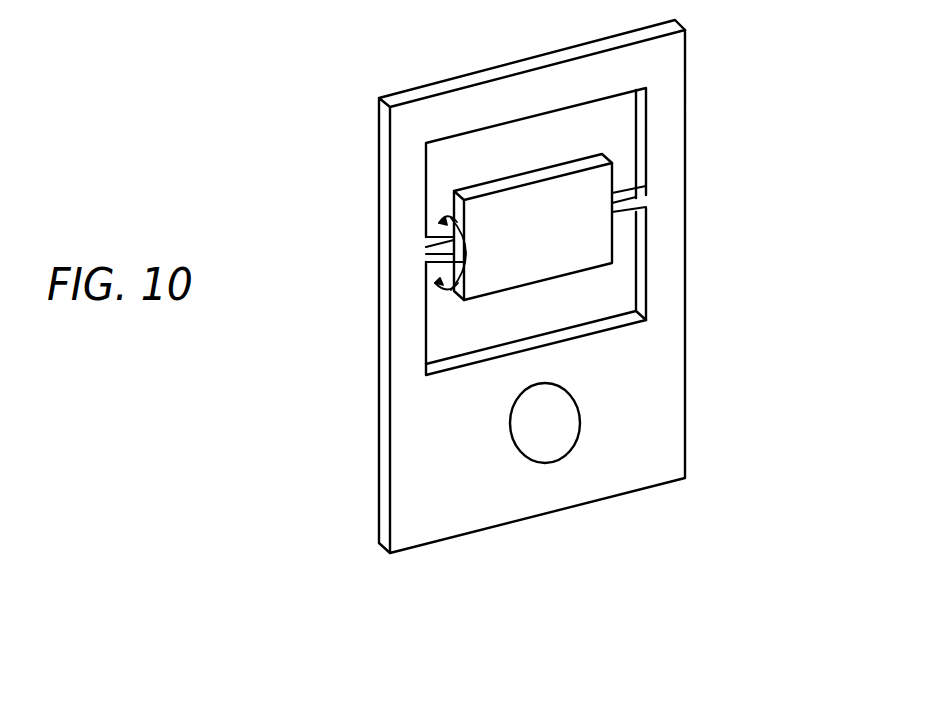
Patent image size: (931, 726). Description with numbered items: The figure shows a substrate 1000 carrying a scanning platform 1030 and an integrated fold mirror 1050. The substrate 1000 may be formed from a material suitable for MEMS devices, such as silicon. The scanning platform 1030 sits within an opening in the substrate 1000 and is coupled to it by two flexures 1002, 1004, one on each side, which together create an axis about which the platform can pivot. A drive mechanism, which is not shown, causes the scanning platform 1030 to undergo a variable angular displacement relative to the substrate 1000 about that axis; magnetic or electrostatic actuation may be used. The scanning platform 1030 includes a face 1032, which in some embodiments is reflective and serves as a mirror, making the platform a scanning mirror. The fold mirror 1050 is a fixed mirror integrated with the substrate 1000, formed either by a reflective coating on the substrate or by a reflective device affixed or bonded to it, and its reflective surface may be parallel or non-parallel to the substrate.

The substrate 1000 is at (685, 48).
The flexure 1002 is at (433, 245).
The flexure 1004 is at (616, 212).
The scanning platform 1030 is at (533, 214).
The face 1032 is at (563, 238).
The fold mirror 1050 is at (580, 430).